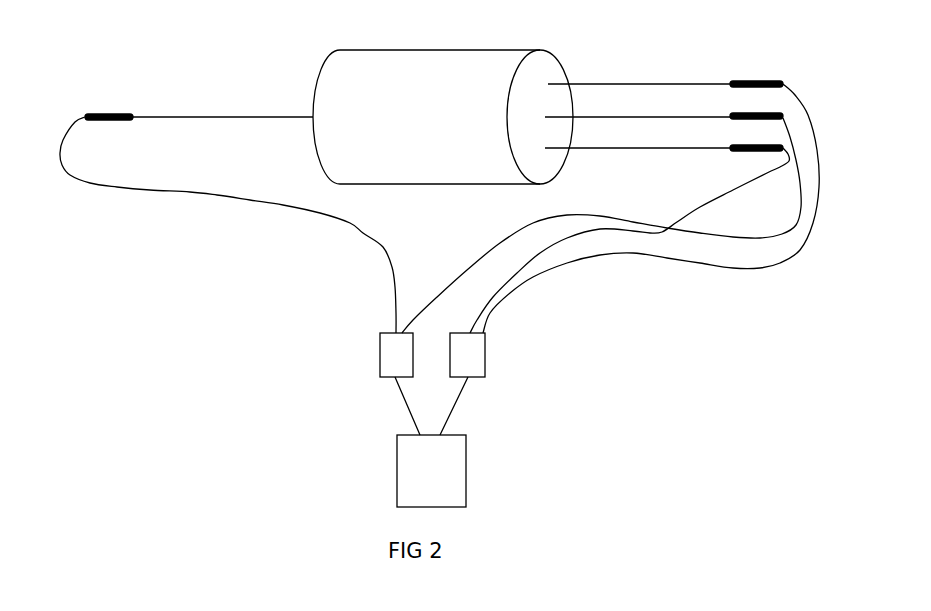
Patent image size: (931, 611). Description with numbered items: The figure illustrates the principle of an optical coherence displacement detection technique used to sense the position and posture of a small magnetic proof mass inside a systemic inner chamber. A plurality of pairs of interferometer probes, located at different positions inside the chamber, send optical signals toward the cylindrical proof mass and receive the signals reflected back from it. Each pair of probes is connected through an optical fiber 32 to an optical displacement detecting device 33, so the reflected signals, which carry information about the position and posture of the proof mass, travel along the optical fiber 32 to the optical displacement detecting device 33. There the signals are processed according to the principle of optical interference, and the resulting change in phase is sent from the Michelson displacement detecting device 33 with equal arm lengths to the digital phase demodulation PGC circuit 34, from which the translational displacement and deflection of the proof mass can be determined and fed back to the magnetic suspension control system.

The optical fiber 32 is at (272, 201).
The optical displacement detecting device 33 is at (432, 355).
The digital phase demodulation PGC circuit 34 is at (431, 471).